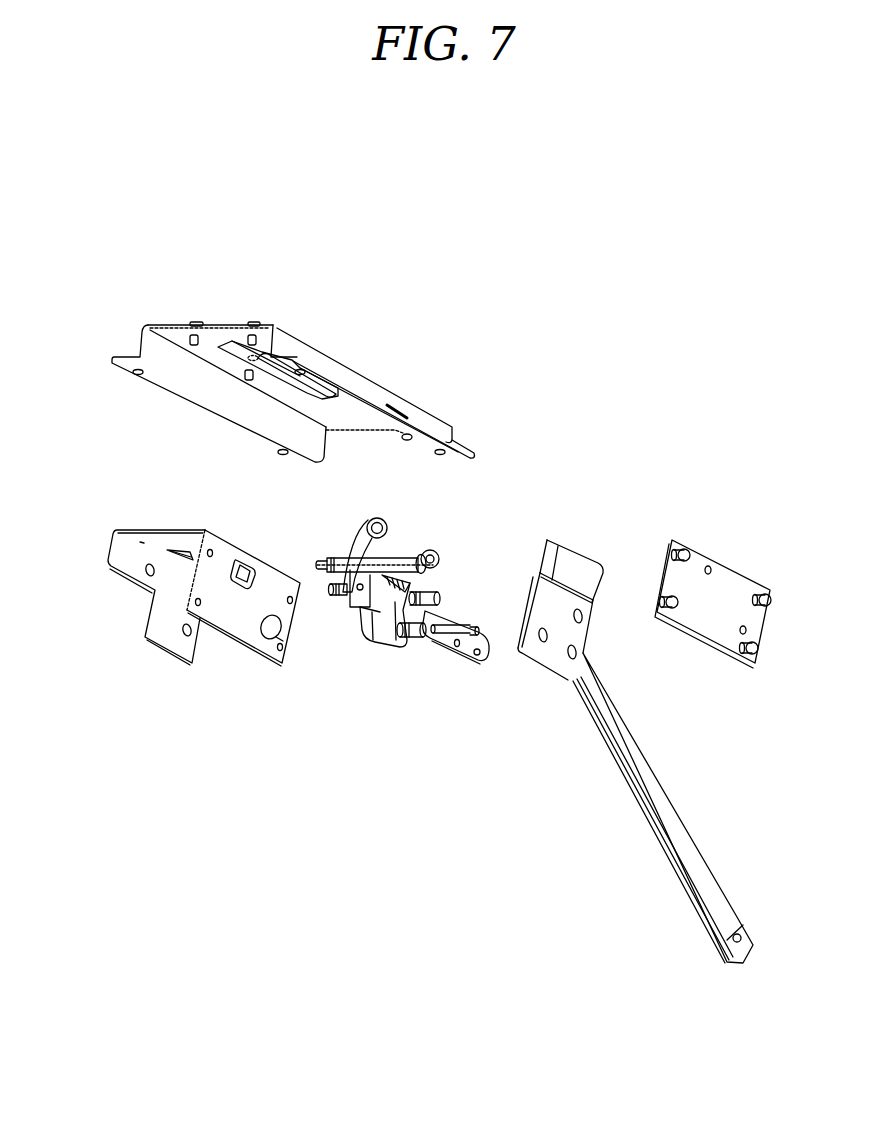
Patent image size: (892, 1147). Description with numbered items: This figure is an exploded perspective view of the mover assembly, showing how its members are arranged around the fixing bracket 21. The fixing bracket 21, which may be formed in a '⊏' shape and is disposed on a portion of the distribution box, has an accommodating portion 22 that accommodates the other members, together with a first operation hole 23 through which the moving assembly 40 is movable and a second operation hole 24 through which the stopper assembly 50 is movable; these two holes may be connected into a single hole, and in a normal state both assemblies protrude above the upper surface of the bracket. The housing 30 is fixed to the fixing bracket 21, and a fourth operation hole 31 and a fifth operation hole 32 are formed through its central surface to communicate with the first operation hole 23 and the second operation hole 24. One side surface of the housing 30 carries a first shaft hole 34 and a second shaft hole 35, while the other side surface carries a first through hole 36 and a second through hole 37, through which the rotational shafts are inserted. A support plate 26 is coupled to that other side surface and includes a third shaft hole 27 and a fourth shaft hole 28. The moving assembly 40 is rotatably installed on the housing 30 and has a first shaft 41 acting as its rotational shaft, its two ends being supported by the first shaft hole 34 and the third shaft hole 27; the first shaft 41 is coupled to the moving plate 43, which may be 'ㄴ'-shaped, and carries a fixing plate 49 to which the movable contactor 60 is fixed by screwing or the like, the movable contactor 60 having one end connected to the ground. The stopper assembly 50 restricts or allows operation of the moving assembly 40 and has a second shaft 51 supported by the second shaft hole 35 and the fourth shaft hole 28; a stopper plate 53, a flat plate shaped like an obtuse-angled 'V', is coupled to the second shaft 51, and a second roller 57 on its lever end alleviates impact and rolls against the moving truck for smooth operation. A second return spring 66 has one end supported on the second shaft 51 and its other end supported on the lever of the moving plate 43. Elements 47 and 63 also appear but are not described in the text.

The fixing bracket 21 is at (377, 390).
The accommodating portion 22 is at (211, 361).
The first operation hole 23 is at (300, 387).
The second operation hole 24 is at (237, 350).
The support plate 26 is at (742, 611).
The third shaft hole 27 is at (750, 630).
The fourth shaft hole 28 is at (713, 570).
The housing 30 is at (170, 600).
The fourth operation hole 31 is at (233, 578).
The fifth operation hole 32 is at (190, 552).
The first shaft hole 34 is at (185, 633).
The second shaft hole 35 is at (147, 568).
The first through hole 36 is at (281, 656).
The second through hole 37 is at (257, 584).
The moving assembly 40 is at (376, 602).
The first shaft 41 is at (403, 641).
The moving plate 43 is at (383, 638).
The fixing cap 47 is at (430, 551).
The fixing plate 49 is at (468, 660).
The stopper assembly 50 is at (369, 534).
The second shaft 51 is at (393, 556).
The stopper plate 53 is at (352, 537).
The second roller 57 is at (378, 520).
The movable contactor 60 is at (636, 730).
The support arm 63 is at (687, 835).
The second return spring 66 is at (413, 580).